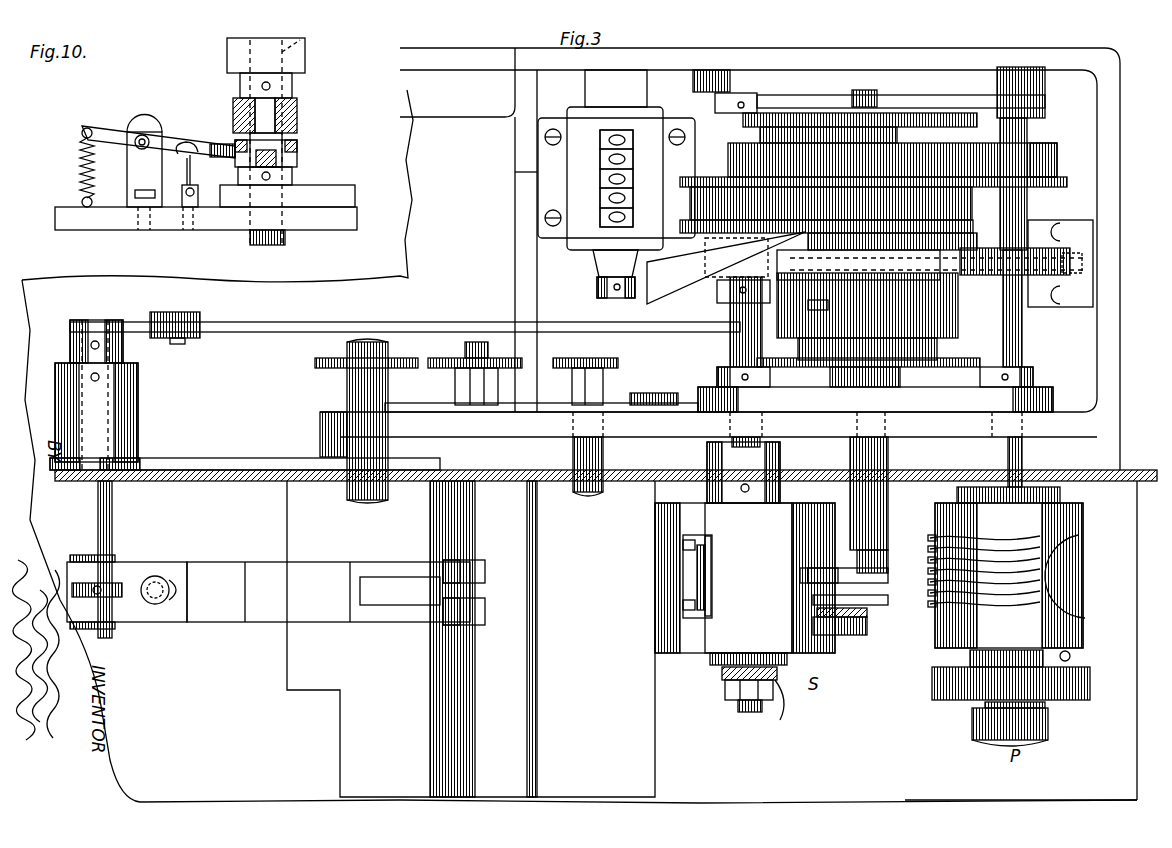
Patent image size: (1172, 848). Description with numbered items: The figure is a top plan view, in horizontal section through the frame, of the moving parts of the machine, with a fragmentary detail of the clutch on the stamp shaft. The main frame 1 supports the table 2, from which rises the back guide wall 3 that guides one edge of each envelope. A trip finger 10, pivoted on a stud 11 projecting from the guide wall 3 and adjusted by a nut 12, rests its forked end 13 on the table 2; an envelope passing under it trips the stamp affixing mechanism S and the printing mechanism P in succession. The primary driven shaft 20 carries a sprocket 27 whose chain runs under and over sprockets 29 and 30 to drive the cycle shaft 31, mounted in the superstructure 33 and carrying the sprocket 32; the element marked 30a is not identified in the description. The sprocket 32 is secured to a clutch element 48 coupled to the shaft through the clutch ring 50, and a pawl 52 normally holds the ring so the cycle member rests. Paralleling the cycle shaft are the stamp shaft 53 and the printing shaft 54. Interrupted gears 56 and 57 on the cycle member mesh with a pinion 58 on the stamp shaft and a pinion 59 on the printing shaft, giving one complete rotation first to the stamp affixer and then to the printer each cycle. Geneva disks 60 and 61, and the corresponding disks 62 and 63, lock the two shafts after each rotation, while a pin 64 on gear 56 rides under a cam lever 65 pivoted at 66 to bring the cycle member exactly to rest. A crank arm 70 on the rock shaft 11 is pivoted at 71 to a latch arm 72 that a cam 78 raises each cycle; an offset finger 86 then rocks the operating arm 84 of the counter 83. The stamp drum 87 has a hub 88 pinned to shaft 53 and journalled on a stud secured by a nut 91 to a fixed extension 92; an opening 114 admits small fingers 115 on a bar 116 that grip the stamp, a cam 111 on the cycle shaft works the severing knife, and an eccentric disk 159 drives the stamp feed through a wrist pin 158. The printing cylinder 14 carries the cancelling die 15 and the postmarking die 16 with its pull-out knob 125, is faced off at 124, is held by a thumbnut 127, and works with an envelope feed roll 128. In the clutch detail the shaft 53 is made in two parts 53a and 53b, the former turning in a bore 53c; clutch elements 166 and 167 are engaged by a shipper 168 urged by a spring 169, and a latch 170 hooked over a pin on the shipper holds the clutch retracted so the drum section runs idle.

In FIG. 3, the main frame 1 is at (1120, 410).
In FIG. 3, the table 2 is at (1017, 783).
In FIG. 3, the back guide wall 3 is at (232, 481).
In FIG. 3, the trip finger 10 is at (262, 562).
In FIG. 3, the stud 11 is at (112, 515).
In FIG. 3, the adjusting nut 12 is at (160, 578).
In FIG. 3, the forked end 13 is at (408, 562).
In FIG. 3, the printing cylinder 14 is at (1015, 648).
In FIG. 3, the cancelling die 15 is at (930, 612).
In FIG. 3, the postmarking die 16 is at (1078, 535).
In FIG. 3, the primary driven shaft 20 is at (367, 345).
In FIG. 3, the sprocket 27 is at (330, 368).
In FIG. 3, the sprocket 29 is at (450, 358).
In FIG. 3, the sprocket 30 is at (622, 350).
In FIG. 3, the shaft 30a is at (590, 492).
In FIG. 3, the cycle shaft 31 is at (888, 452).
In FIG. 3, the sprocket 32 is at (948, 367).
In FIG. 3, the superstructure 33 is at (1158, 462).
In FIG. 3, the clutch element 48 is at (867, 316).
In FIG. 3, the clutch ring 50 is at (860, 280).
In FIG. 3, the stop pawl 52 is at (980, 275).
In FIG. 3, the stamp shaft 53 is at (730, 340).
In FIG. 10, the shaft section 53a is at (287, 240).
In FIG. 10, the shaft section 53b is at (305, 45).
In FIG. 10, the bore 53c is at (270, 110).
In FIG. 3, the printing shaft 54 is at (1022, 333).
In FIG. 3, the interrupted gear 56 is at (735, 140).
In FIG. 3, the interrupted gear 57 is at (1000, 205).
In FIG. 3, the pinion 58 is at (728, 170).
In FIG. 3, the pinion 59 is at (1045, 143).
In FIG. 3, the Geneva stop disk 60 is at (850, 220).
In FIG. 3, the Geneva stop disk 61 is at (730, 255).
In FIG. 3, the Geneva stop disk 62 is at (880, 175).
In FIG. 3, the Geneva stop disk 63 is at (1048, 220).
In FIG. 3, the pin 64 is at (868, 90).
In FIG. 3, the cam lever 65 is at (958, 85).
In FIG. 3, the pivot 66 is at (1025, 67).
In FIG. 3, the crank arm 70 is at (108, 320).
In FIG. 3, the pivot 71 is at (178, 312).
In FIG. 3, the latch arm 72 is at (700, 322).
In FIG. 3, the cam 78 is at (888, 233).
In FIG. 3, the counter 83 is at (583, 170).
In FIG. 3, the operating arm 84 is at (597, 295).
In FIG. 3, the offset finger 86 is at (726, 268).
In FIG. 3, the stamp drum 87 is at (672, 653).
In FIG. 3, the hub 88 is at (812, 288).
In FIG. 3, the nut 91 is at (735, 680).
In FIG. 3, the fixed extension 92 is at (791, 707).
In FIG. 3, the cam 111 is at (805, 568).
In FIG. 3, the opening 114 is at (705, 640).
In FIG. 3, the fingers 115 is at (712, 550).
In FIG. 3, the bar 116 is at (695, 575).
In FIG. 3, the faced-off portion 124 is at (955, 500).
In FIG. 3, the pull-out knob 125 is at (1070, 654).
In FIG. 3, the thumbnut 127 is at (972, 718).
In FIG. 3, the envelope feed roll 128 is at (932, 680).
In FIG. 3, the wrist pin 158 is at (845, 635).
In FIG. 3, the eccentric disk 159 is at (888, 575).
In FIG. 10, the clutch element 166 is at (297, 125).
In FIG. 10, the clutch element 167 is at (297, 150).
In FIG. 10, the shipper 168 is at (205, 135).
In FIG. 10, the spring 169 is at (82, 165).
In FIG. 10, the latch 170 is at (150, 128).